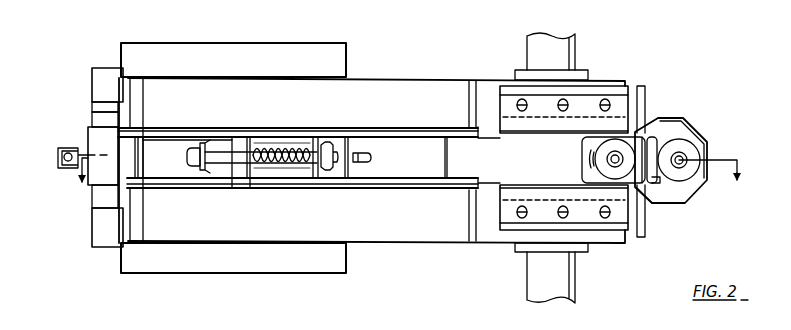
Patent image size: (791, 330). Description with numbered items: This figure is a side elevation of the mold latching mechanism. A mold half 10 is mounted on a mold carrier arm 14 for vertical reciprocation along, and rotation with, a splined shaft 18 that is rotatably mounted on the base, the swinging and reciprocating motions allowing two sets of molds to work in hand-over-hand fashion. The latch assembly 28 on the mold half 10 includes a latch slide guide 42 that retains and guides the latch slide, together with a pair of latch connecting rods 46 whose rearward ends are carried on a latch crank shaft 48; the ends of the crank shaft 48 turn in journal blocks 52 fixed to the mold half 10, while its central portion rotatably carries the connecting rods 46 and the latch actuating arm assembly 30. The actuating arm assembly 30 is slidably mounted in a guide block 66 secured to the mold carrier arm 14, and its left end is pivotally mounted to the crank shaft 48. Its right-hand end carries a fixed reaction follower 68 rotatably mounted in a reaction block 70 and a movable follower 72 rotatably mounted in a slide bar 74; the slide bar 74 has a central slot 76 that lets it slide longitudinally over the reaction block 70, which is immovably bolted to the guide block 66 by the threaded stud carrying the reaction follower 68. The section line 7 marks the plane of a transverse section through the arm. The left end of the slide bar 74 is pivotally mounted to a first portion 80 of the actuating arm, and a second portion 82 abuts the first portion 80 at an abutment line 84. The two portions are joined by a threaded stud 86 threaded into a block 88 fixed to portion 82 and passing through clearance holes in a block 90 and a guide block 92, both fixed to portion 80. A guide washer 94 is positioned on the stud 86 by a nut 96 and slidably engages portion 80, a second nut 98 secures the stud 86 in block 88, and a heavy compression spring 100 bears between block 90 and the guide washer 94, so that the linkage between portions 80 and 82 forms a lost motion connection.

The mold half 10 is at (254, 42).
The mold carrier arm 14 is at (411, 75).
The splined shaft 18 is at (574, 34).
The latch assembly 28 is at (81, 104).
The latch actuating arm assembly 30 is at (424, 126).
The latch slide guide 42 is at (66, 146).
The latch connecting rod 46 is at (92, 121).
The latch crank shaft 48 is at (100, 204).
The journal block 52 is at (92, 77).
The guide block 66 is at (644, 92).
The reaction follower 68 is at (618, 154).
The reaction block 70 is at (650, 198).
The movable follower 72 is at (691, 151).
The slide bar 74 is at (697, 124).
The central slot 76 is at (656, 181).
The section line 7- 7 is at (408, 182).
The first portion of the actuating arm 80 is at (408, 190).
The second portion of the actuating arm 82 is at (158, 186).
The abutment line 84 is at (228, 128).
The threaded stud 86 is at (300, 144).
The block 88 is at (215, 142).
The block 90 is at (245, 175).
The guide block 92 is at (362, 170).
The guide washer 94 is at (326, 173).
The nut 96 is at (336, 134).
The second nut 98 is at (200, 174).
The heavy compression spring 100 is at (295, 174).